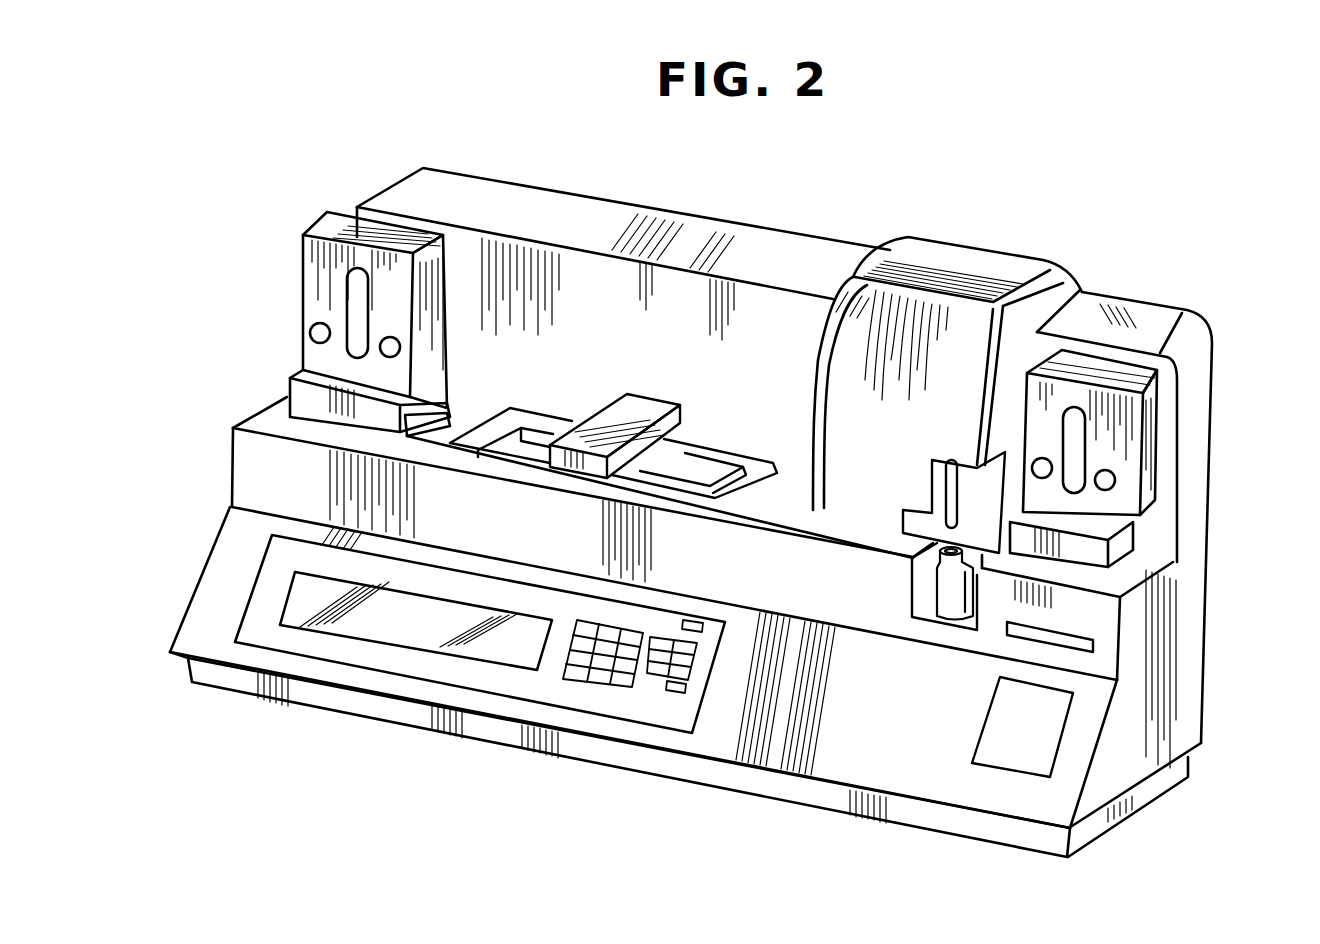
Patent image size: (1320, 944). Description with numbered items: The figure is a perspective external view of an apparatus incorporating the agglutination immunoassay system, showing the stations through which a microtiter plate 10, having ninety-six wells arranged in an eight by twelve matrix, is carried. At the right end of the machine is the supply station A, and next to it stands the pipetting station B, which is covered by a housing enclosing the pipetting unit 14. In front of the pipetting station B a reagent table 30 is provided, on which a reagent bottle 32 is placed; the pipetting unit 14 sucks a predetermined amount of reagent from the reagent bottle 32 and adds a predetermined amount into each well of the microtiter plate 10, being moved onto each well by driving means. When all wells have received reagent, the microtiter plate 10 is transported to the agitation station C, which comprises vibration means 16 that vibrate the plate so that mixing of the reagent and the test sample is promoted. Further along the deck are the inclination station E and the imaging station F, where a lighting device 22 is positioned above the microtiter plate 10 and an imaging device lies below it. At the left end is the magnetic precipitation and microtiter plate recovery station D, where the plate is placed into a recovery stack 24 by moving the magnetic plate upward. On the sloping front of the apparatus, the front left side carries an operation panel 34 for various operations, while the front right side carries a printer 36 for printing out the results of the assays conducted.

The microtiter plate 10 is at (1137, 467).
The pipetting unit 14 is at (937, 257).
The vibration means 16 is at (770, 500).
The lighting device 22 is at (592, 426).
The recovery stack 24 is at (305, 305).
The reagent table 30 is at (920, 582).
The reagent bottle 32 is at (943, 607).
The operation panel 34 is at (403, 660).
The printer 36 is at (1070, 670).
The supply station A is at (1143, 293).
The pipetting station B is at (990, 240).
The agitation station C is at (800, 472).
The magnetic precipitation and microtiter plate recovery station D is at (325, 212).
The inclination station E is at (727, 447).
The imaging station F is at (655, 393).